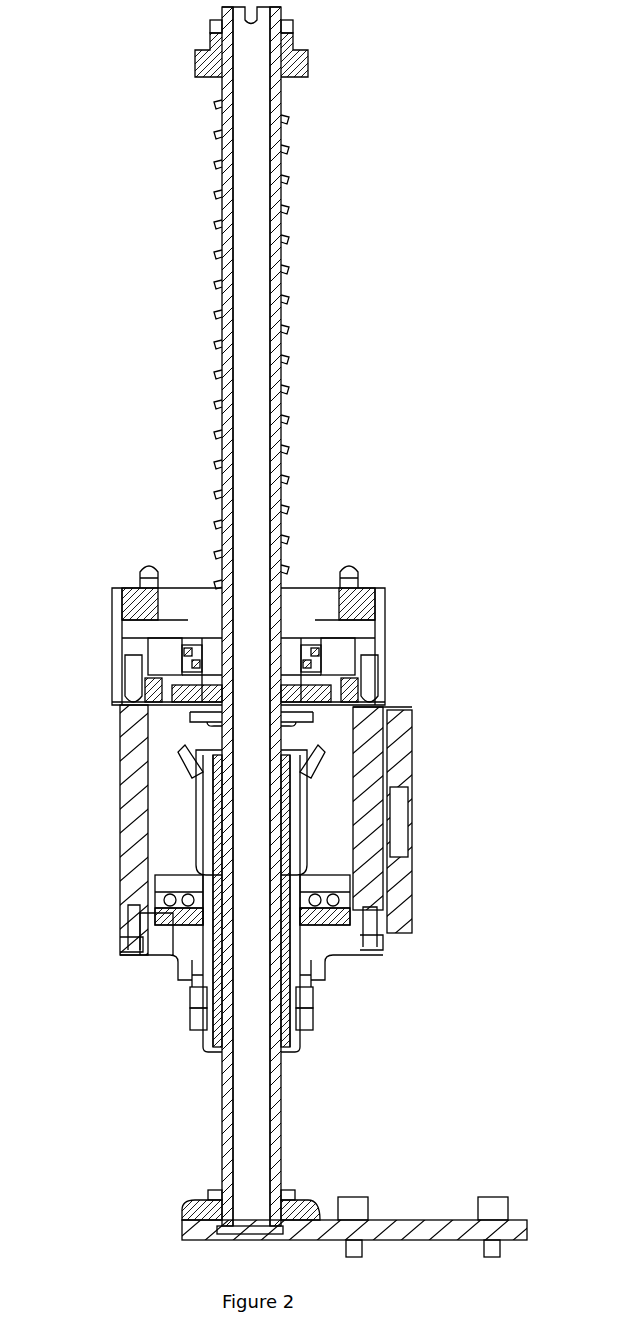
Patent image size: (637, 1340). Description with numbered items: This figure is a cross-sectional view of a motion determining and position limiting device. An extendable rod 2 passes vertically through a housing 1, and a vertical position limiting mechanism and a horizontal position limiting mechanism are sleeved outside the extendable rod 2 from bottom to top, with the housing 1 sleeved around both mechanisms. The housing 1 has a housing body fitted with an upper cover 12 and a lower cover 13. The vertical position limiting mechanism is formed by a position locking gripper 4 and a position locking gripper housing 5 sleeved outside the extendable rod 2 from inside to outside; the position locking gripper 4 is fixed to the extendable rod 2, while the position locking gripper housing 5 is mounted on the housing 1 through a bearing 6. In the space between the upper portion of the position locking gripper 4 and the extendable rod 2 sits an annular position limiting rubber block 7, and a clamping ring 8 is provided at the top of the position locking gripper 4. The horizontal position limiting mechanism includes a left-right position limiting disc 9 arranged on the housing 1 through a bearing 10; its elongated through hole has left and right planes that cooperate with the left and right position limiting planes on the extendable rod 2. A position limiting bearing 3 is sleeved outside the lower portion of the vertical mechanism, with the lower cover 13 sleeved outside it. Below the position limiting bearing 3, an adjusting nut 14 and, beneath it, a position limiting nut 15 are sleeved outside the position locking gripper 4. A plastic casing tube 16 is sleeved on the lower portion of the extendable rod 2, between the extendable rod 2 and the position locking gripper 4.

The housing 1 is at (390, 833).
The extendable rod 2 is at (258, 512).
The position limiting bearing 3 is at (180, 975).
The position locking gripper 4 is at (148, 690).
The position locking gripper housing 5 is at (196, 830).
The bearing 6 is at (318, 895).
The position limiting rubber block 7 is at (345, 752).
The clamping ring 8 is at (380, 650).
The left-right position limiting disc 9 is at (198, 670).
The bearing 10 is at (380, 688).
The upper cover 12 is at (368, 640).
The lower cover 13 is at (158, 953).
The adjusting nut 14 is at (192, 1000).
The position limiting nut 15 is at (193, 1012).
The plastic casing tube 16 is at (303, 990).